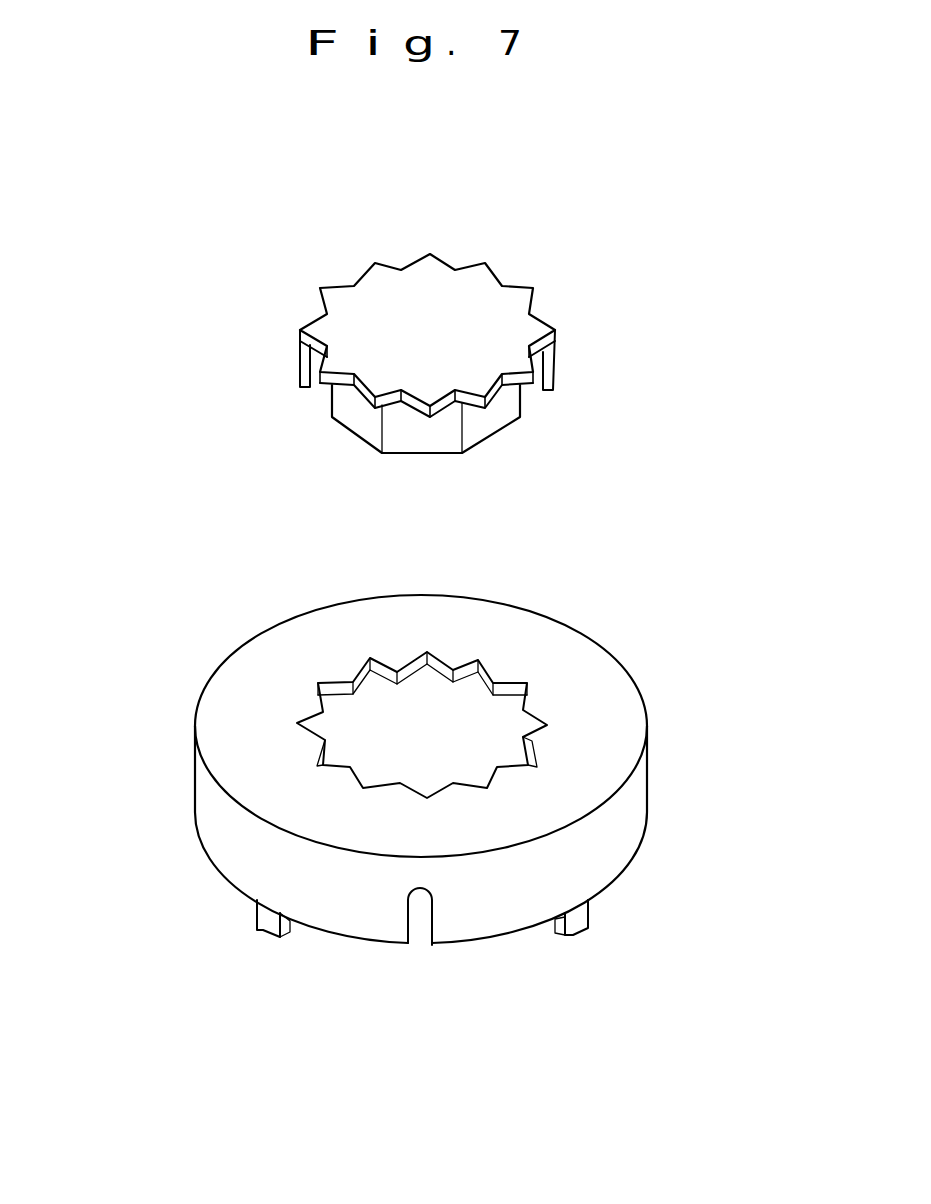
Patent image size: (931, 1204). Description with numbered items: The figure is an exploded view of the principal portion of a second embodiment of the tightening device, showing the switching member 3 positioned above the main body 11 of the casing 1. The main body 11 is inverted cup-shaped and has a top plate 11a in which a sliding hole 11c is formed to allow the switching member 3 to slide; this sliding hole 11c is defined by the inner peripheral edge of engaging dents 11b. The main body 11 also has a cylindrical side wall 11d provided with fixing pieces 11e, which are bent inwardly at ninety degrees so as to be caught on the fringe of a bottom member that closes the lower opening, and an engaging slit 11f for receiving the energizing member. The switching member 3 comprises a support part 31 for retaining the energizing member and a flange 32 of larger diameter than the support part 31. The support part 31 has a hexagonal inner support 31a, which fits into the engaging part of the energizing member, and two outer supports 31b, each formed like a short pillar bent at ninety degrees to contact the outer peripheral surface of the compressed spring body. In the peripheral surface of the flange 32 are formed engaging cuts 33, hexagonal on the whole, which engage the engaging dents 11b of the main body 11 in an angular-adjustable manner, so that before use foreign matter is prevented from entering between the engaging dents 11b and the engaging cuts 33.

The casing 1 is at (440, 800).
The switching member 3 is at (427, 361).
The support part 31 is at (409, 456).
The hexagonal inner support 31a is at (437, 448).
The outer supports 31b is at (302, 368).
The flange 32 is at (497, 298).
The engaging cuts 33 is at (533, 295).
The main body 11 is at (420, 800).
The top plate 11a is at (233, 728).
The engaging dents 11b is at (438, 792).
The sliding hole 11c is at (447, 720).
The cylindrical side wall 11d is at (640, 815).
The fixing pieces 11e is at (268, 933).
The engaging slit 11f is at (420, 937).